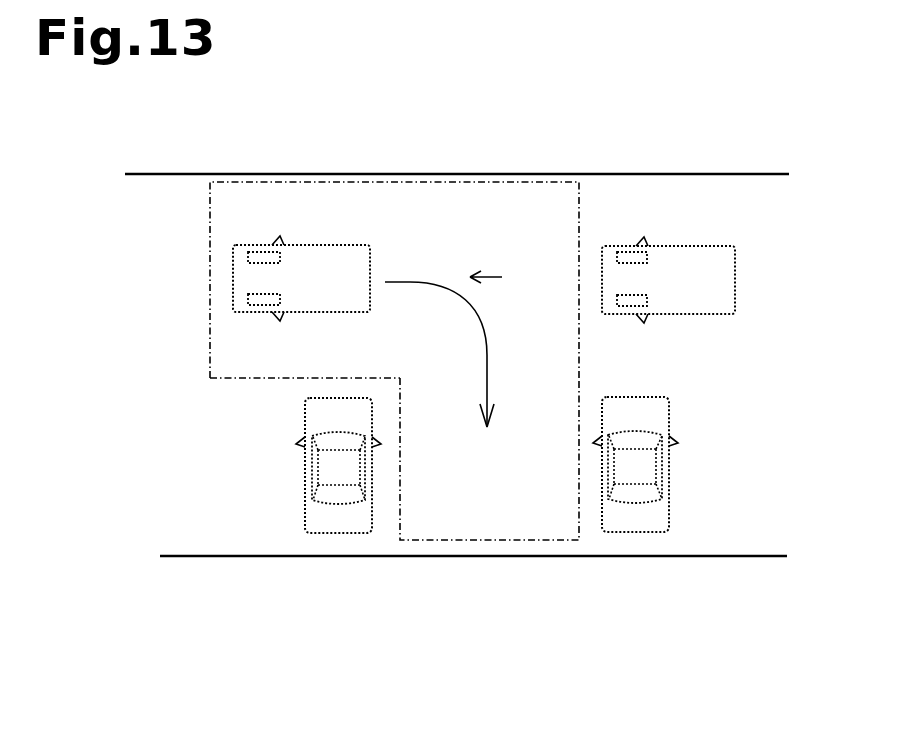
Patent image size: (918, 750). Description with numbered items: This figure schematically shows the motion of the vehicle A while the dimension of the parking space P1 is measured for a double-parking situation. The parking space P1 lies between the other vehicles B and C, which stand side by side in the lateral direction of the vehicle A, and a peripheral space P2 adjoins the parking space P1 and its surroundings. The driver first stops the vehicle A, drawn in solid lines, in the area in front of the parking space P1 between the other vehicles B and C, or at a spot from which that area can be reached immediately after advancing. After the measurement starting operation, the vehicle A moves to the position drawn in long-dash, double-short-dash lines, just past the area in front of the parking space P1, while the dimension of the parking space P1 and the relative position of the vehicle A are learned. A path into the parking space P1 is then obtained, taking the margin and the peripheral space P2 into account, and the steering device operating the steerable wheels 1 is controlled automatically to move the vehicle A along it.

The steerable wheels 1 is at (280, 257).
The vehicle A is at (333, 312).
The other vehicle B is at (305, 411).
The other vehicle C is at (669, 412).
The parking space P1 is at (582, 418).
The peripheral space P2 is at (579, 350).